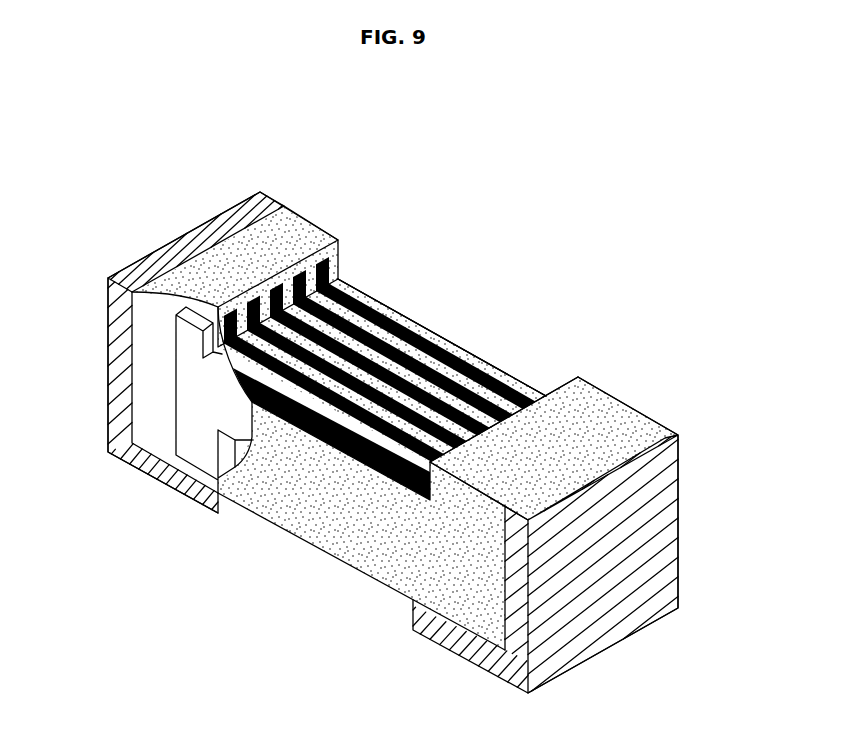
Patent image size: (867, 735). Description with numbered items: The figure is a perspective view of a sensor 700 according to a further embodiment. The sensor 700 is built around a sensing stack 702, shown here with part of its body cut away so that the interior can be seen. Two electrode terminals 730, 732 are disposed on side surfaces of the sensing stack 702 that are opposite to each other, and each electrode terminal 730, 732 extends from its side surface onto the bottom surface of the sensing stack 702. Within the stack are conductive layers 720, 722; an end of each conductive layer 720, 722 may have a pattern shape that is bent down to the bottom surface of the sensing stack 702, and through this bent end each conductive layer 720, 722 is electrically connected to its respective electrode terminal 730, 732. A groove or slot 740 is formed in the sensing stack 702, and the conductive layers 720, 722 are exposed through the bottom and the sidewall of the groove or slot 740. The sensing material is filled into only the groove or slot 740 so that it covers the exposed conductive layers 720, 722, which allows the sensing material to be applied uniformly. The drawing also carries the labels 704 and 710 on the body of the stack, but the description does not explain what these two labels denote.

The sensor 700 is at (154, 101).
The sensing stack 702 is at (253, 550).
The second body portion / coil region 704 is at (399, 283).
The upper body block 710 is at (312, 238).
The conductive layer 720 is at (193, 448).
The conductive layer 722 is at (505, 375).
The electrode terminal 730 is at (110, 364).
The electrode terminal 732 is at (672, 534).
The groove or slot 740 is at (452, 341).